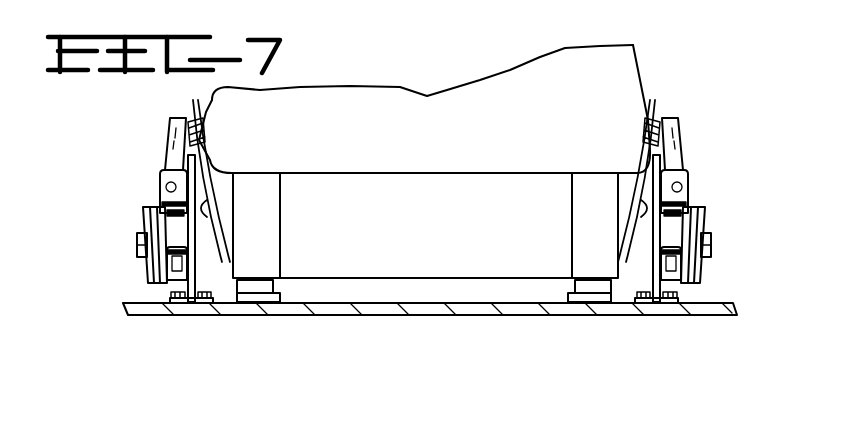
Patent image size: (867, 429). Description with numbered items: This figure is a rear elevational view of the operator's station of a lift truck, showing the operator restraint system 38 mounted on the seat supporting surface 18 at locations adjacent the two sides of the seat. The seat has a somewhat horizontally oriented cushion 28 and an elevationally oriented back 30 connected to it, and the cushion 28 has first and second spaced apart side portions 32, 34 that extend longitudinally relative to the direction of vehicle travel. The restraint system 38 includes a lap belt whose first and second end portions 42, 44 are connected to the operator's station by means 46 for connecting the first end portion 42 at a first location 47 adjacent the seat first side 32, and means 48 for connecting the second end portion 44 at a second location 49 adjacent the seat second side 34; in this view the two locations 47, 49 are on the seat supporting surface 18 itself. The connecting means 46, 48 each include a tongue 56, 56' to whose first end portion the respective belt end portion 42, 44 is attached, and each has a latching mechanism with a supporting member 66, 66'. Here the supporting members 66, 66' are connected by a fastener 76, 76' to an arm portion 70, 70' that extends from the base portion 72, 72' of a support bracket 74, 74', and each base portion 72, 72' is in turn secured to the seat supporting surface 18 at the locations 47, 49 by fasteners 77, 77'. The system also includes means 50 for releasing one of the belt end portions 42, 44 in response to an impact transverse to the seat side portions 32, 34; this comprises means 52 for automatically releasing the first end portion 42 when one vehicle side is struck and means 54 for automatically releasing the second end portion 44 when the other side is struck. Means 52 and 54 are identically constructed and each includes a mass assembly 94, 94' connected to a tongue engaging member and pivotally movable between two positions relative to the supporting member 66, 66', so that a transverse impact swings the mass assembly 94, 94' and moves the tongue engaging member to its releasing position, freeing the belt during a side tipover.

The seat supporting surface 18 is at (716, 311).
The seat cushion 28 is at (411, 241).
The seat back 30 is at (428, 134).
The first side portion of seat cushion 32 is at (200, 205).
The second side portion of seat cushion 34 is at (572, 204).
The operator restraint system 38 is at (472, 56).
The lap belt first end portion 42 is at (198, 118).
The lap belt second end portion 44 is at (655, 115).
The means for connecting lap belt first end portion 46 is at (125, 168).
The first location 47 is at (172, 324).
The means for connecting lap belt second end portion 48 is at (725, 173).
The second location 49 is at (662, 320).
The means for releasing 50 is at (670, 58).
The means for automatically releasing lap belt first end portion 52 is at (128, 272).
The means for automatically releasing lap belt second end portion 54 is at (722, 250).
The tongue 56 is at (131, 140).
The tongue 56' is at (708, 140).
The supporting member 66 is at (231, 181).
The supporting member 66' is at (614, 181).
The arm portion 70 is at (268, 225).
The arm portion 70' is at (626, 258).
The base portion 72 is at (203, 260).
The base portion 72' is at (635, 258).
The support bracket 74 is at (261, 291).
The support bracket 74' is at (585, 291).
The fastener 76 is at (235, 181).
The fastener 76' is at (612, 221).
The fastener 77 is at (145, 303).
The fastener 77' is at (690, 283).
The mass assembly 94 is at (117, 243).
The mass assembly 94' is at (729, 239).